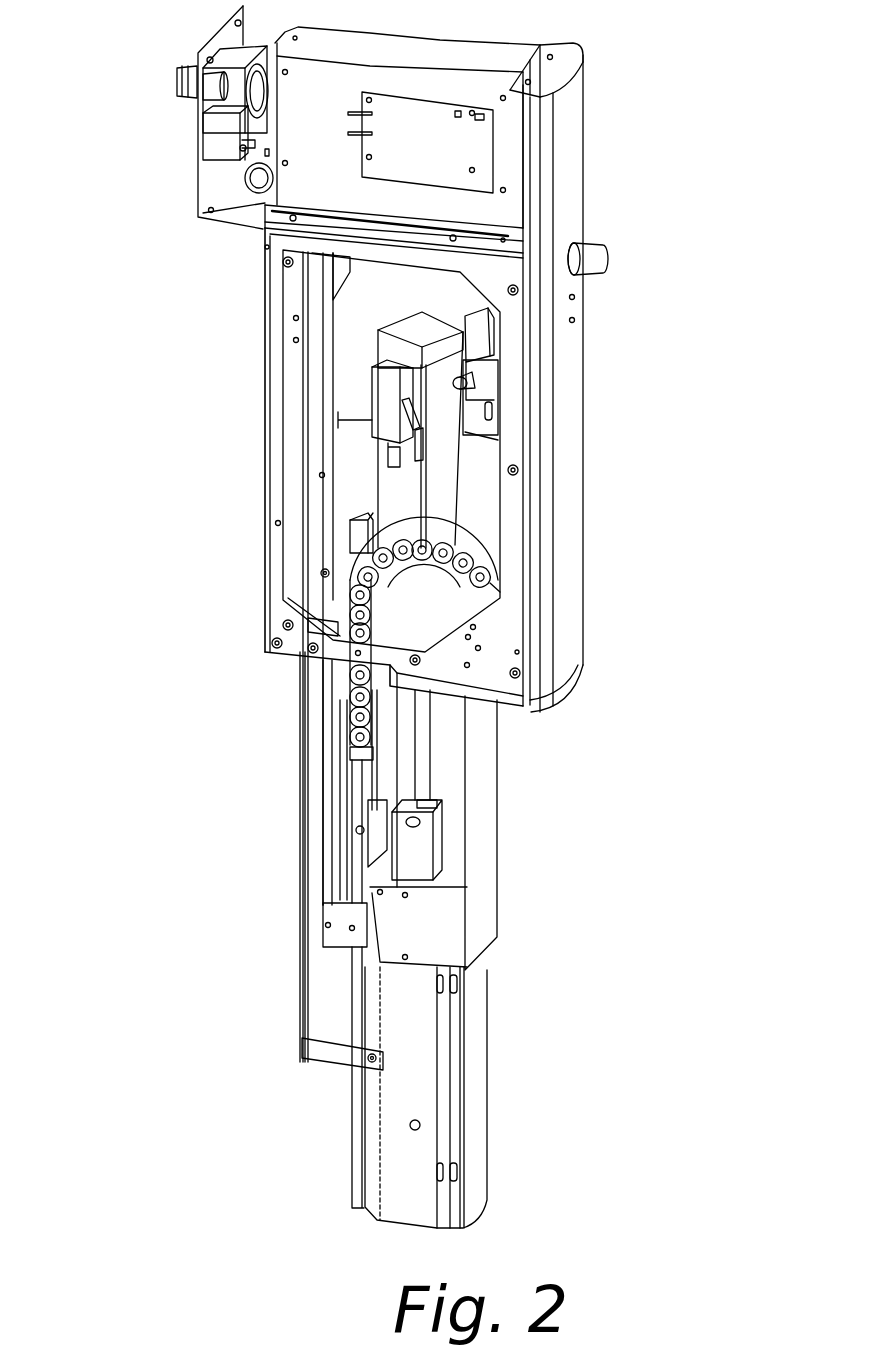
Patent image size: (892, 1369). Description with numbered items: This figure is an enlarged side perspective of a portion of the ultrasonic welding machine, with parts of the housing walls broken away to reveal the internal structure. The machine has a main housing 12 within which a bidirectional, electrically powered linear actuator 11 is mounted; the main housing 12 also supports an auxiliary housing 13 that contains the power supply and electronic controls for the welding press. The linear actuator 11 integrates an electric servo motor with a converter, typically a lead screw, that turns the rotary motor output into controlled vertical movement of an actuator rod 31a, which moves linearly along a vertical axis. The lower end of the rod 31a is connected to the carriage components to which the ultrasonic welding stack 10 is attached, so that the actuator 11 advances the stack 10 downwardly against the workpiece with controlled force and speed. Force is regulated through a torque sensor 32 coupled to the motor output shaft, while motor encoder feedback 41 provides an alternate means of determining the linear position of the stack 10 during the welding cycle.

The ultrasonic welding stack 10 is at (482, 1085).
The linear actuator 11 is at (464, 508).
The main housing 12 is at (572, 598).
The auxiliary housing 13 is at (574, 172).
The actuator rod 31a is at (431, 764).
The torque sensor 32 is at (388, 394).
The encoder feedback 41 is at (392, 326).